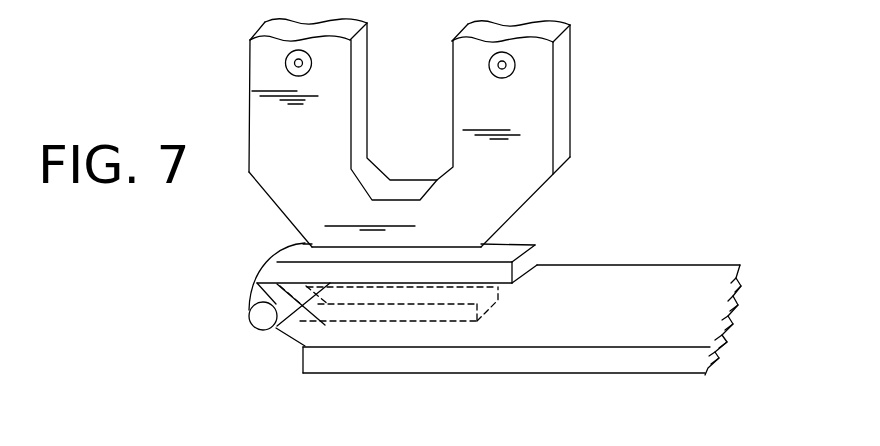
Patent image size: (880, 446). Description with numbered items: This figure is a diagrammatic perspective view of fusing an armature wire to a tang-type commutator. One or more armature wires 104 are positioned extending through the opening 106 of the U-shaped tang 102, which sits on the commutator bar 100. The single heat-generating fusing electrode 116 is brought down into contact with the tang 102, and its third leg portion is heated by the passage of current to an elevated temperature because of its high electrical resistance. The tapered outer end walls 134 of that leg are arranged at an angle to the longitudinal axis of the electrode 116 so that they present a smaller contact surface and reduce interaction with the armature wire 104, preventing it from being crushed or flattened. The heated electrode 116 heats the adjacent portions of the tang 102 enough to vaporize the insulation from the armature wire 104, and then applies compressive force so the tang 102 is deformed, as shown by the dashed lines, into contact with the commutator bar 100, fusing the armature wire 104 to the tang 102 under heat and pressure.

The electrode 116 is at (580, 100).
The tapered spaced outer end walls 134 is at (278, 207).
The commutator bar 100 is at (627, 277).
The tang 102 is at (255, 282).
The armature wire 104 is at (260, 318).
The opening 106 is at (299, 327).